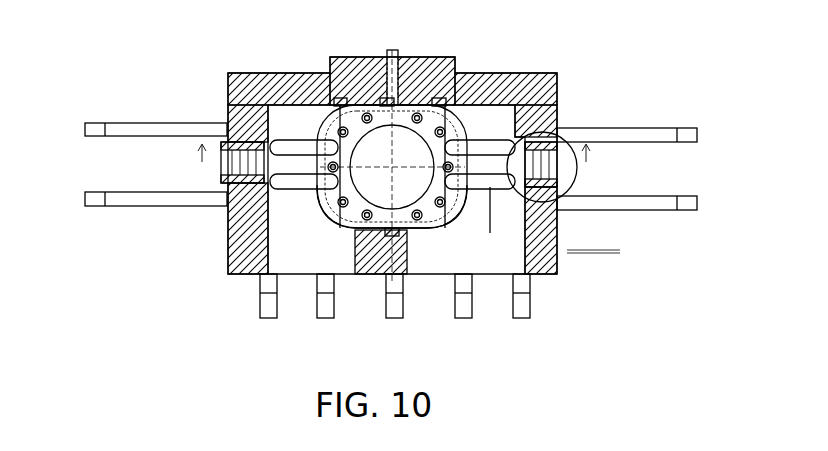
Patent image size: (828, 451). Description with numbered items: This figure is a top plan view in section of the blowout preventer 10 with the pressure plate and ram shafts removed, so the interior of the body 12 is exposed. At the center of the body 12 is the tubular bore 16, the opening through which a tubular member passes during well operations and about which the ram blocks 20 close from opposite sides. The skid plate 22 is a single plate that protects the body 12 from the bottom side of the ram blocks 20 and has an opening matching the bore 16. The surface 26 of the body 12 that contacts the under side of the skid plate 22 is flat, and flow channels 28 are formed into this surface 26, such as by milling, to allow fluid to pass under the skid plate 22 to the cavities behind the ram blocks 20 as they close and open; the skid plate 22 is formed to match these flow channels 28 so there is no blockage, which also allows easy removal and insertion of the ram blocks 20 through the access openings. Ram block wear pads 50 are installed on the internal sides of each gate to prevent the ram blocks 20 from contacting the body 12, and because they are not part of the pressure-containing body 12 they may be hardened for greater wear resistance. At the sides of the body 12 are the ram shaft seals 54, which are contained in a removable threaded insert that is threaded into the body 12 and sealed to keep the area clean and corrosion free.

The blowout preventer 10 is at (138, 87).
The body 12 is at (528, 80).
The tubular bore 16 is at (370, 148).
The ram blocks 20 is at (330, 137).
The skid plate 22 is at (420, 122).
The surface 26 is at (321, 204).
The flow channels 28 is at (490, 233).
The ram block wear pads 50 is at (340, 100).
The ram shaft seals 54 is at (220, 172).